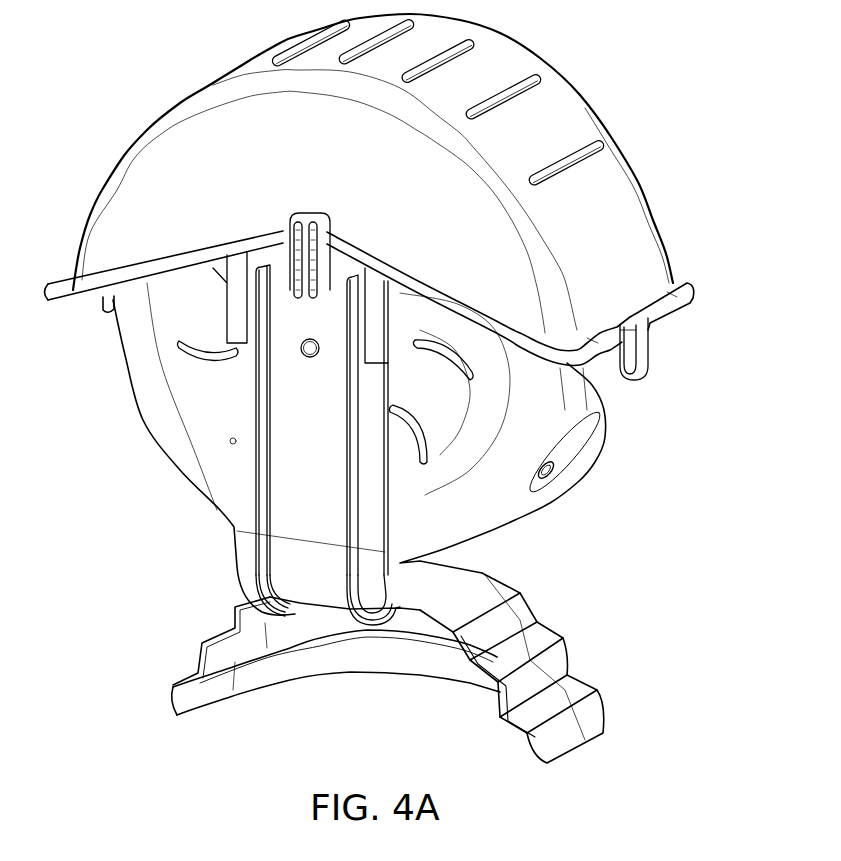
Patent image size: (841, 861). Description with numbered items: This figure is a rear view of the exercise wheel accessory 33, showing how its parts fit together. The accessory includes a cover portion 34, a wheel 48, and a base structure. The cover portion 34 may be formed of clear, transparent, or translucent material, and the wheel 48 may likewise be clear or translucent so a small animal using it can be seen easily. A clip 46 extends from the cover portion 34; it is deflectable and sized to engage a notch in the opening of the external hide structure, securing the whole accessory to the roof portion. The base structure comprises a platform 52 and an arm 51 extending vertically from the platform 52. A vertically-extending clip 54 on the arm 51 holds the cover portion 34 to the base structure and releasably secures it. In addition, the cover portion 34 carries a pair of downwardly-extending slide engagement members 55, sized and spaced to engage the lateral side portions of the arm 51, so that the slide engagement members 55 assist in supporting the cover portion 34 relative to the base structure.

The exercise wheel accessory 33 is at (628, 79).
The cover portion 34 is at (640, 222).
The clip 46 is at (640, 363).
The wheel 48 is at (507, 502).
The arm 51 is at (258, 373).
The platform 52 is at (580, 680).
The vertically-extending clip 54 is at (308, 221).
The slide engagement members 55 is at (233, 302).